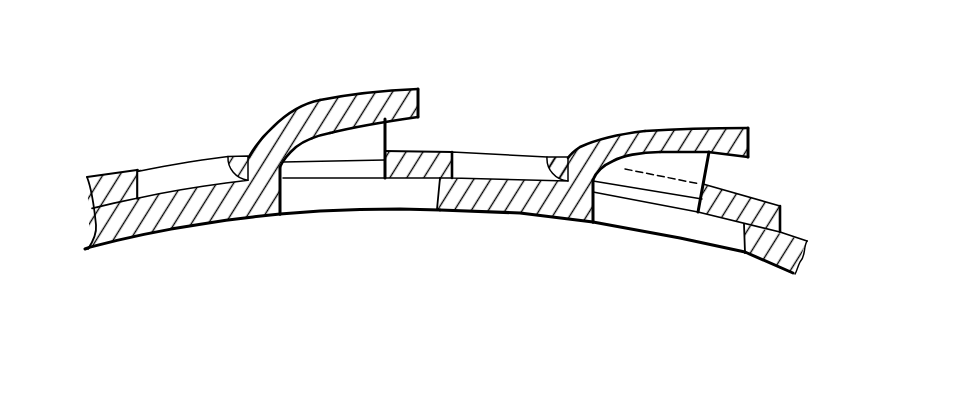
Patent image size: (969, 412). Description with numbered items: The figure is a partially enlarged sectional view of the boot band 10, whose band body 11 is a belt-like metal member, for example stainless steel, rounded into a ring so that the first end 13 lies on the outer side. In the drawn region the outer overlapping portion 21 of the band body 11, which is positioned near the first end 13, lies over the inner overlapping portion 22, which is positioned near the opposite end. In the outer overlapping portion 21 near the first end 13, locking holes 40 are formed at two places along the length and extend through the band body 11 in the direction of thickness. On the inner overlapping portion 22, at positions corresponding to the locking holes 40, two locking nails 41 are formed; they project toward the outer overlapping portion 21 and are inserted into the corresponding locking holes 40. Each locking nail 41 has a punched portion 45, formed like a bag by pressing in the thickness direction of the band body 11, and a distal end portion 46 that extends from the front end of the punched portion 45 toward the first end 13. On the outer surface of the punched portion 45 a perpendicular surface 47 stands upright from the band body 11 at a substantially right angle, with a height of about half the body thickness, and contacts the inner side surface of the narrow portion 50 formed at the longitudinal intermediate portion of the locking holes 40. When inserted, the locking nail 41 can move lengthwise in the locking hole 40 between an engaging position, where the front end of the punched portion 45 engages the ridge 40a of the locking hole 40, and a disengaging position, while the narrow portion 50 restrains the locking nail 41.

The boot band 10 is at (784, 58).
The band body 11 is at (797, 236).
The first end 13 is at (783, 217).
The outer overlapping portion 21 is at (107, 174).
The inner overlapping portion 22 is at (143, 234).
The locking hole 40 is at (175, 170).
The ridge 40a is at (364, 209).
The locking nail 41 is at (340, 92).
The punched portion 45 is at (376, 133).
The distal end portion 46 is at (420, 89).
The perpendicular surface 47 is at (240, 160).
The narrow portion 50 is at (243, 156).